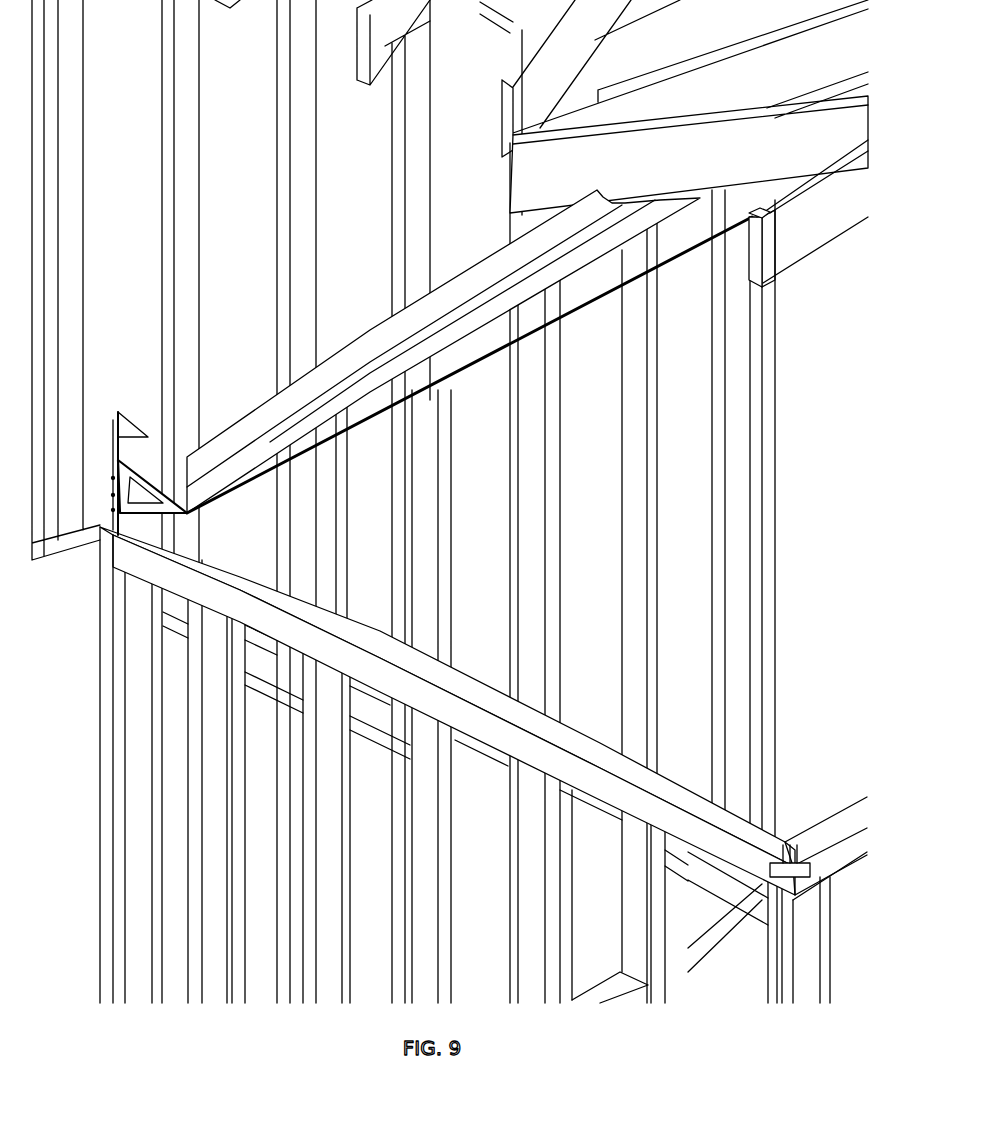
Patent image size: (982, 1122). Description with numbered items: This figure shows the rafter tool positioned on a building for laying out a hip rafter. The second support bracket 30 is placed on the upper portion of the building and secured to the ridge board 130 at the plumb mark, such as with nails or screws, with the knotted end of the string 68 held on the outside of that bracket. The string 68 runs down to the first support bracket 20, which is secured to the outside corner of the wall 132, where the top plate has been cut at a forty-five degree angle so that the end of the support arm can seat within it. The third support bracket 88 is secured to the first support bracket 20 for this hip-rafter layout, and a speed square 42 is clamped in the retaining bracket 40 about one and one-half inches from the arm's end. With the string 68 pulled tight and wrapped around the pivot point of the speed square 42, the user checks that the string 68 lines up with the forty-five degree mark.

The first support bracket 20 is at (117, 452).
The second support bracket 30 is at (772, 210).
The retaining bracket 40 is at (133, 422).
The speed square 42 is at (140, 470).
The string 68 is at (566, 305).
The third support bracket 88 is at (113, 515).
The ridge board 130 is at (803, 195).
The wall 132 is at (800, 862).